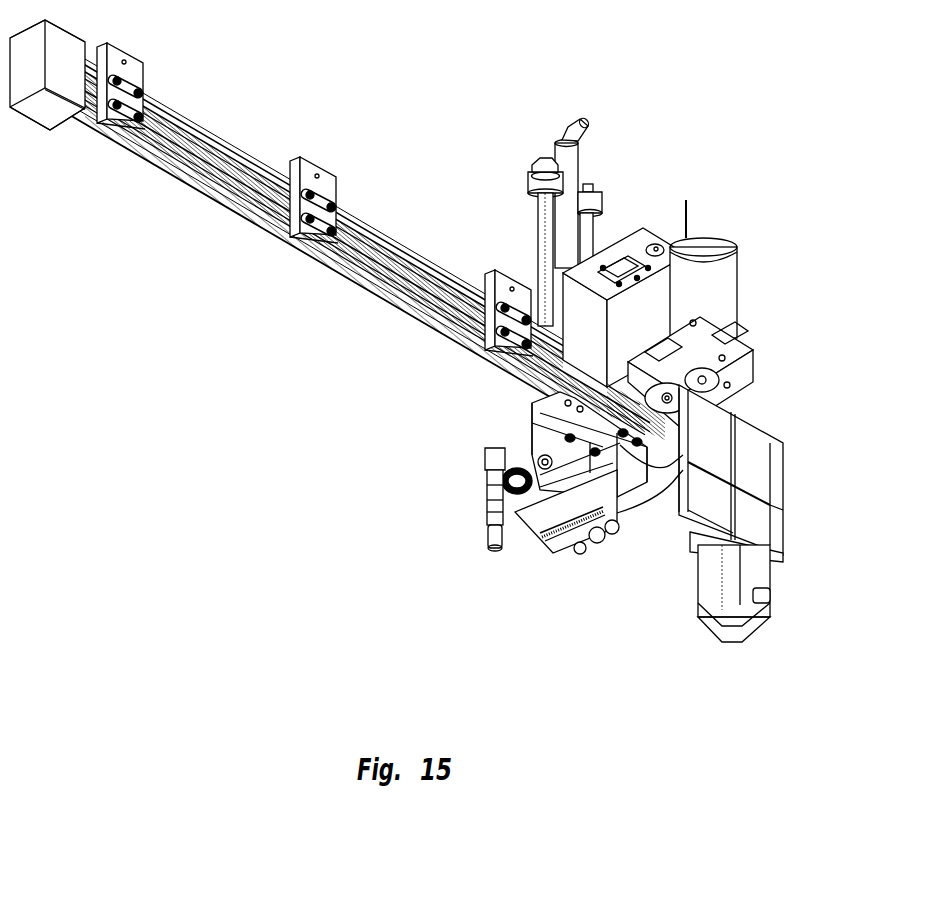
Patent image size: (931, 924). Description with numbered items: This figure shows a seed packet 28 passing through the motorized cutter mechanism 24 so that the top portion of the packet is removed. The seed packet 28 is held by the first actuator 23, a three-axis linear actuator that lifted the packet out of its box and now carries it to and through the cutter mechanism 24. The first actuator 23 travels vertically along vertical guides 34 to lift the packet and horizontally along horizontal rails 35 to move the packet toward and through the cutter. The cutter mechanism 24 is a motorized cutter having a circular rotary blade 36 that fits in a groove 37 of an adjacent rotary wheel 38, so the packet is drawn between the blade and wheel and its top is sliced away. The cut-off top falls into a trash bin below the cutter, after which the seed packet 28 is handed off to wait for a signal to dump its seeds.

The first actuator 23 is at (630, 518).
The cutter mechanism 24 is at (701, 293).
The seed packet 28 is at (723, 435).
The vertical guides 34 is at (540, 237).
The horizontal rails 35 is at (457, 345).
The circular rotary blade 36 is at (740, 385).
The groove 37 is at (670, 383).
The rotary wheel 38 is at (655, 408).